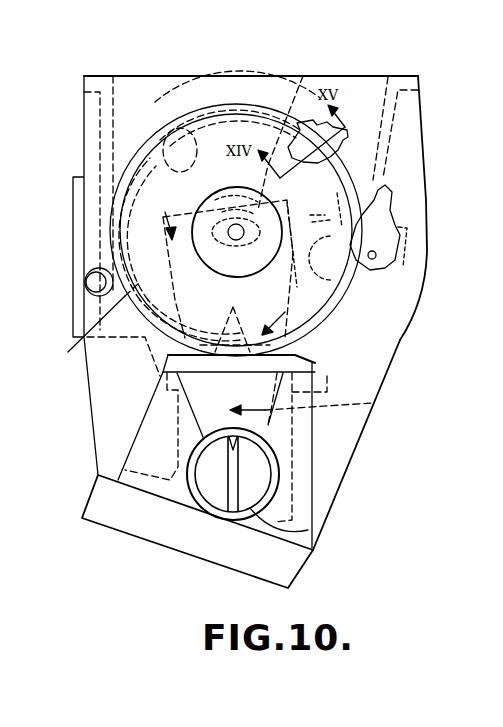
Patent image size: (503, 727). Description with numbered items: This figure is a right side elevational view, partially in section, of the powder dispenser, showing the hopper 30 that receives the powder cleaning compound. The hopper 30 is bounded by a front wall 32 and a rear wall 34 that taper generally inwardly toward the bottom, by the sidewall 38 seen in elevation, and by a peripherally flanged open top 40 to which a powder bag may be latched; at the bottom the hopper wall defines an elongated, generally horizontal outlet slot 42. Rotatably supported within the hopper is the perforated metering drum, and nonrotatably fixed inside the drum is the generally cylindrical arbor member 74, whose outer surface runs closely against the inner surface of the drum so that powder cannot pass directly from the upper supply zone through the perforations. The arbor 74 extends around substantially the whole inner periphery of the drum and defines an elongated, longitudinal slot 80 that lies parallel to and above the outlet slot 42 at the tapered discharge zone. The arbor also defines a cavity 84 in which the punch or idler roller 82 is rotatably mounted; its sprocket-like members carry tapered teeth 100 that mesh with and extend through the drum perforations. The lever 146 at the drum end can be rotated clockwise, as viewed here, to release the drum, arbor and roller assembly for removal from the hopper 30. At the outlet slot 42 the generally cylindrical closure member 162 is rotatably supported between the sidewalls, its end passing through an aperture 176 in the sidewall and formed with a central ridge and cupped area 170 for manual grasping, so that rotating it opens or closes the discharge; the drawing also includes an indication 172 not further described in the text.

The hopper 30 is at (250, 298).
The front wall 32 is at (398, 344).
The rear wall 34 is at (93, 117).
The sidewall 38 is at (412, 290).
The peripherally flanged open top 40 is at (184, 74).
The outlet slot 42 is at (170, 528).
The arbor member 74 is at (303, 73).
The slot 80 is at (296, 338).
The idler roller 82 is at (314, 240).
The cavity 84 is at (184, 206).
The teeth 100 is at (235, 321).
The lever 146 is at (390, 210).
The closure member 162 is at (262, 468).
The central ridge and cupped area 170 is at (240, 493).
The flow direction arrow 172 is at (372, 403).
The aperture 176 is at (300, 534).